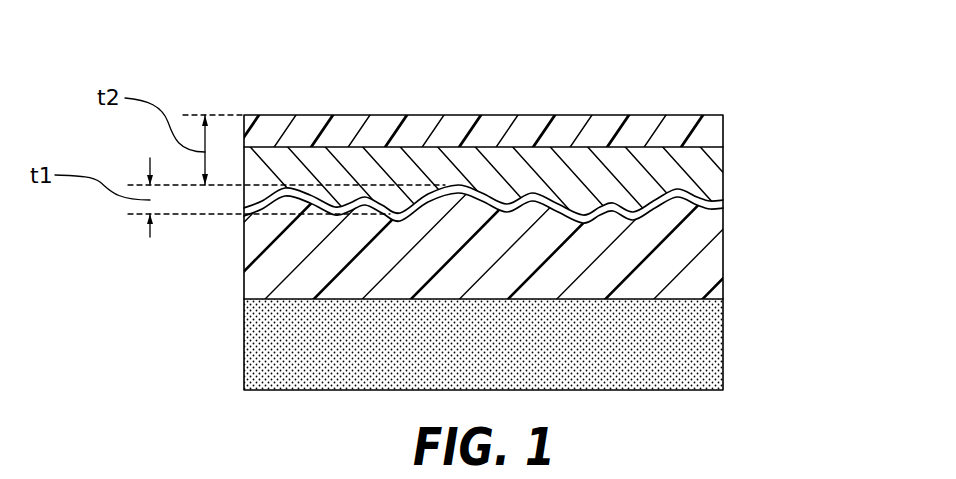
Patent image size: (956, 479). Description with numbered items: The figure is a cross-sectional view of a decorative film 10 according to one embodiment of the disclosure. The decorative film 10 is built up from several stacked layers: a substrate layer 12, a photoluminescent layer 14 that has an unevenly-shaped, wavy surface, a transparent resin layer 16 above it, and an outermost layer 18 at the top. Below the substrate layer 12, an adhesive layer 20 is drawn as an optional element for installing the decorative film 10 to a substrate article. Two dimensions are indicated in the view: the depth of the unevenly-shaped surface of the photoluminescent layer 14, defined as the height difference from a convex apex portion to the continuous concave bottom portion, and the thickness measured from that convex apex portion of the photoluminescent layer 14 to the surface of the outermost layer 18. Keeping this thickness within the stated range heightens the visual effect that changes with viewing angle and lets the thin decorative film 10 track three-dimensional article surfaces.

The decorative film 10 is at (716, 81).
The substrate layer 12 is at (712, 253).
The photoluminescent layer 14 is at (720, 208).
The transparent resin layer 16 is at (715, 163).
The outermost layer 18 is at (713, 133).
The adhesive layer 20 is at (712, 327).